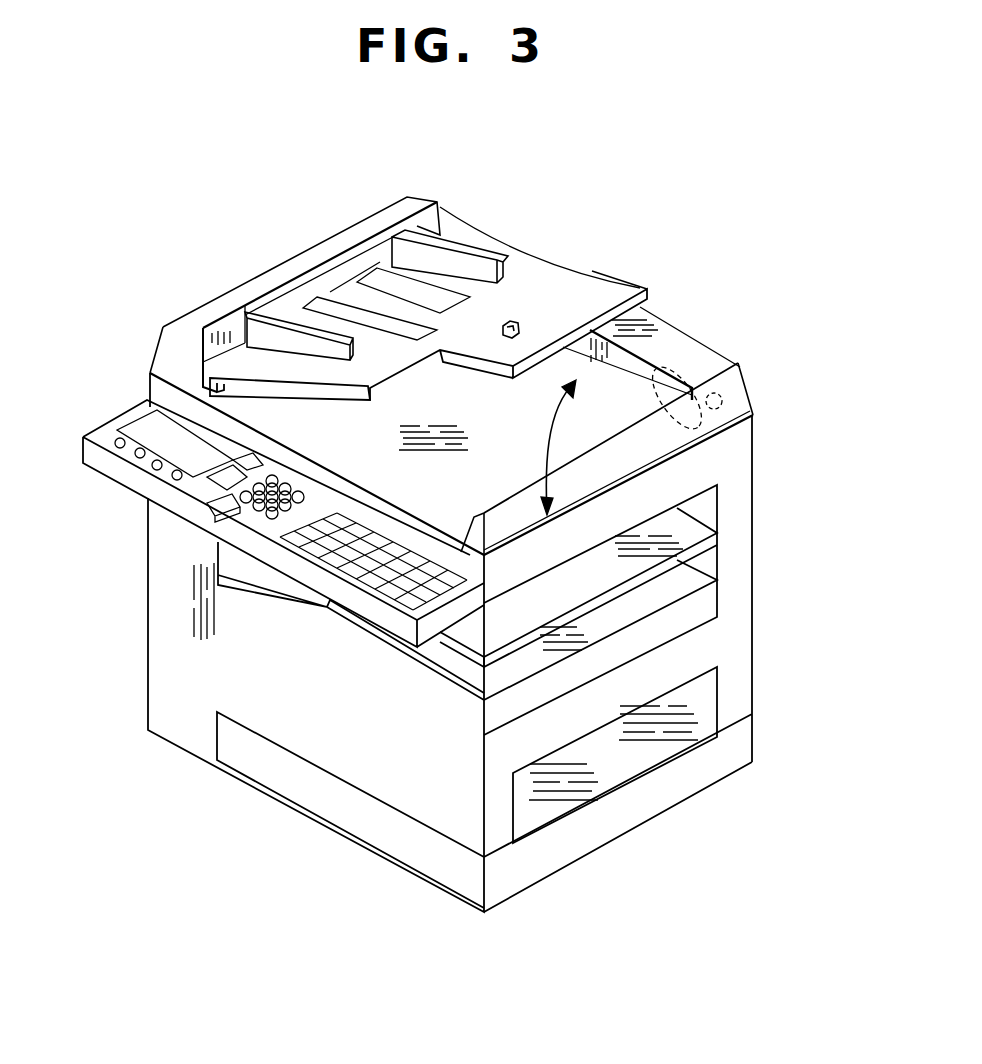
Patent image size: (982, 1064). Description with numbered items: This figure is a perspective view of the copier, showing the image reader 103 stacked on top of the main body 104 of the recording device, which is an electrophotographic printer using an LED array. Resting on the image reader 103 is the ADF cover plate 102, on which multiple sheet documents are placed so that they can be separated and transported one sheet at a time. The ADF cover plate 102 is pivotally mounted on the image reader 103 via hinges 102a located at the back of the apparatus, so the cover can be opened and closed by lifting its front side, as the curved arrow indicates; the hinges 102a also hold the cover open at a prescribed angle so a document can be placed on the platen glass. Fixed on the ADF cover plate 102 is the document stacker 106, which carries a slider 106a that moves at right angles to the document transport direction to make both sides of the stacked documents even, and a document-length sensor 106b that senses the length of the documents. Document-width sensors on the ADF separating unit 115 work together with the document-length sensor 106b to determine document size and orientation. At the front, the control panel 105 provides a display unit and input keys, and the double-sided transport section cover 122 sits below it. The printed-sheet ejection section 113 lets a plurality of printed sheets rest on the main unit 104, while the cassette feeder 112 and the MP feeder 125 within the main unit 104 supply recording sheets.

The ADF cover plate 102 is at (665, 441).
The hinges 102a is at (692, 366).
The image reader 103 is at (687, 481).
The main body of recording device 104 is at (737, 642).
The control panel 105 is at (240, 540).
The document stacker 106 is at (607, 287).
The slider 106a is at (450, 263).
The document-length sensor 106b is at (510, 323).
The cassette feeder 112 is at (267, 777).
The printed-sheet ejection section 113 is at (480, 633).
The ADF separating unit 115 is at (230, 302).
The double-sided transport section cover 122 is at (310, 630).
The MP feeder 125 is at (613, 773).